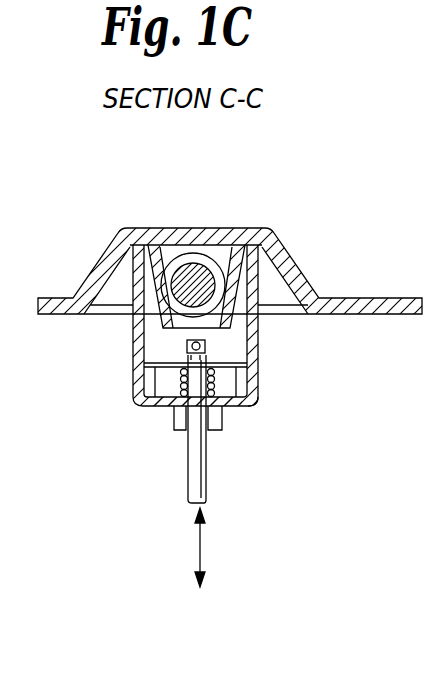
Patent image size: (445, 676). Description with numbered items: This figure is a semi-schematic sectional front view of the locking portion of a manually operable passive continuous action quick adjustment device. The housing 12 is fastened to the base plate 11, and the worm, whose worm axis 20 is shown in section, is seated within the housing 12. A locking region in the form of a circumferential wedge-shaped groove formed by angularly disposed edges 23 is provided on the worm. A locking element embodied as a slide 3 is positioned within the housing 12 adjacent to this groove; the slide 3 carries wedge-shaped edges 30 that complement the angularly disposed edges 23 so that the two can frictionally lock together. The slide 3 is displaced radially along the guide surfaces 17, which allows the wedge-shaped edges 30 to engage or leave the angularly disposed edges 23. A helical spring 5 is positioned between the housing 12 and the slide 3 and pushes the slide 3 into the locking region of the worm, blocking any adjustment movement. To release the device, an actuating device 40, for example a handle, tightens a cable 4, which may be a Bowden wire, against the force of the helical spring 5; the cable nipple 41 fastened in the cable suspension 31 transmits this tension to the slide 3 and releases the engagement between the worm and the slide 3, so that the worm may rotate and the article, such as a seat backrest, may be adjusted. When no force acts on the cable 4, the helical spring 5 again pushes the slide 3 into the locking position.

The base plate 11 is at (113, 251).
The wedge-shaped edges 30 is at (134, 247).
The worm axis 20 is at (189, 280).
The angularly disposed edges 23 is at (233, 278).
The slide 3 is at (160, 346).
The cable suspension 31 is at (208, 346).
The helical spring 5 is at (186, 383).
The cable nipple 41 is at (214, 377).
The cable 4 is at (174, 410).
The actuating device 40 is at (190, 447).
The guide surfaces 17 is at (259, 405).
The housing 12 is at (226, 405).